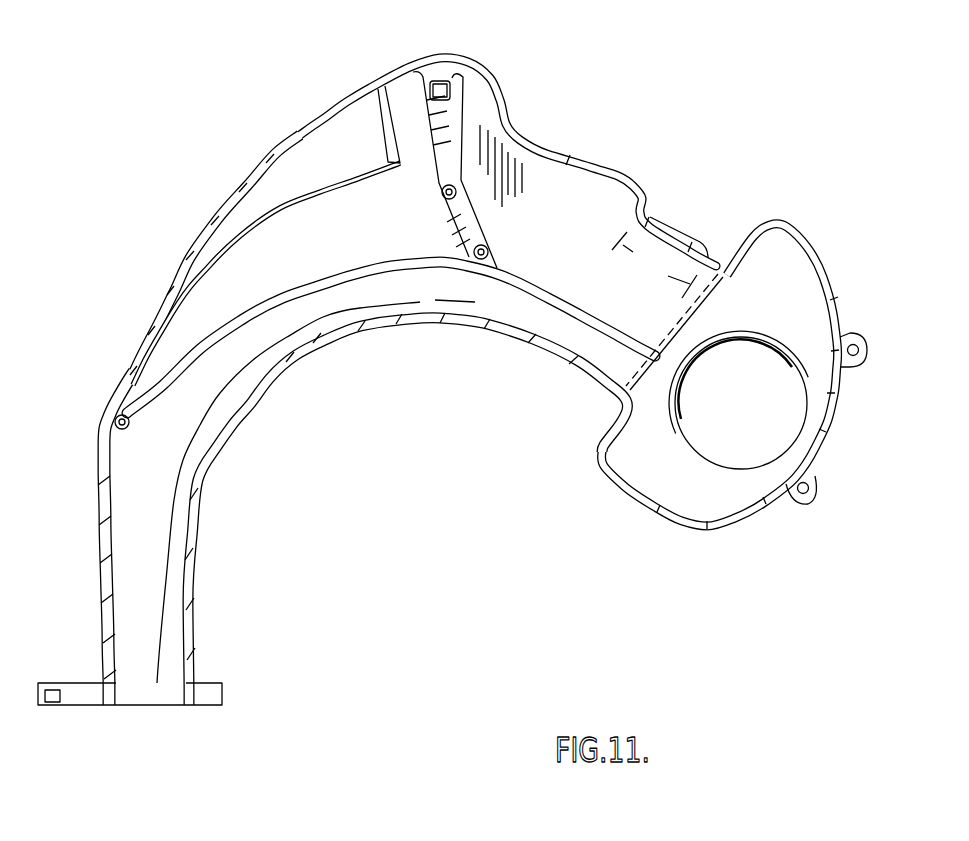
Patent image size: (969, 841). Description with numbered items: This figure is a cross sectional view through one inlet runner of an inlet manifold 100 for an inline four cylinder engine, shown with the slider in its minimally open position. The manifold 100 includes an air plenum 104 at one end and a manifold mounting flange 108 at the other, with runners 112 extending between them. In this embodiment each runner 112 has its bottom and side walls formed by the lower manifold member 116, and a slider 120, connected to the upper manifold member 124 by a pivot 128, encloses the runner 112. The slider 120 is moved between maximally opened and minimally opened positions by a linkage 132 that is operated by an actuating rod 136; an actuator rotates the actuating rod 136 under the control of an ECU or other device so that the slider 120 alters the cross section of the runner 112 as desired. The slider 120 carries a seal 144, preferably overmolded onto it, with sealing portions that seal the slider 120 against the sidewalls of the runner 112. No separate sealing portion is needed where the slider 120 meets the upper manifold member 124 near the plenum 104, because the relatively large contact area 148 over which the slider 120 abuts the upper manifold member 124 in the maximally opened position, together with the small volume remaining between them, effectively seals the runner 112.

The manifold 100 is at (452, 360).
The air plenum 104 is at (790, 262).
The manifold mounting flange 108 is at (205, 693).
The runner 112 is at (188, 434).
The lower manifold member 116 is at (408, 324).
The slider 120 is at (313, 280).
The upper manifold member 124 is at (540, 140).
The pivot 128 is at (117, 408).
The linkage 132 is at (455, 132).
The actuating rod 136 is at (452, 78).
The seal 144 is at (240, 318).
The contact area 148 is at (654, 265).